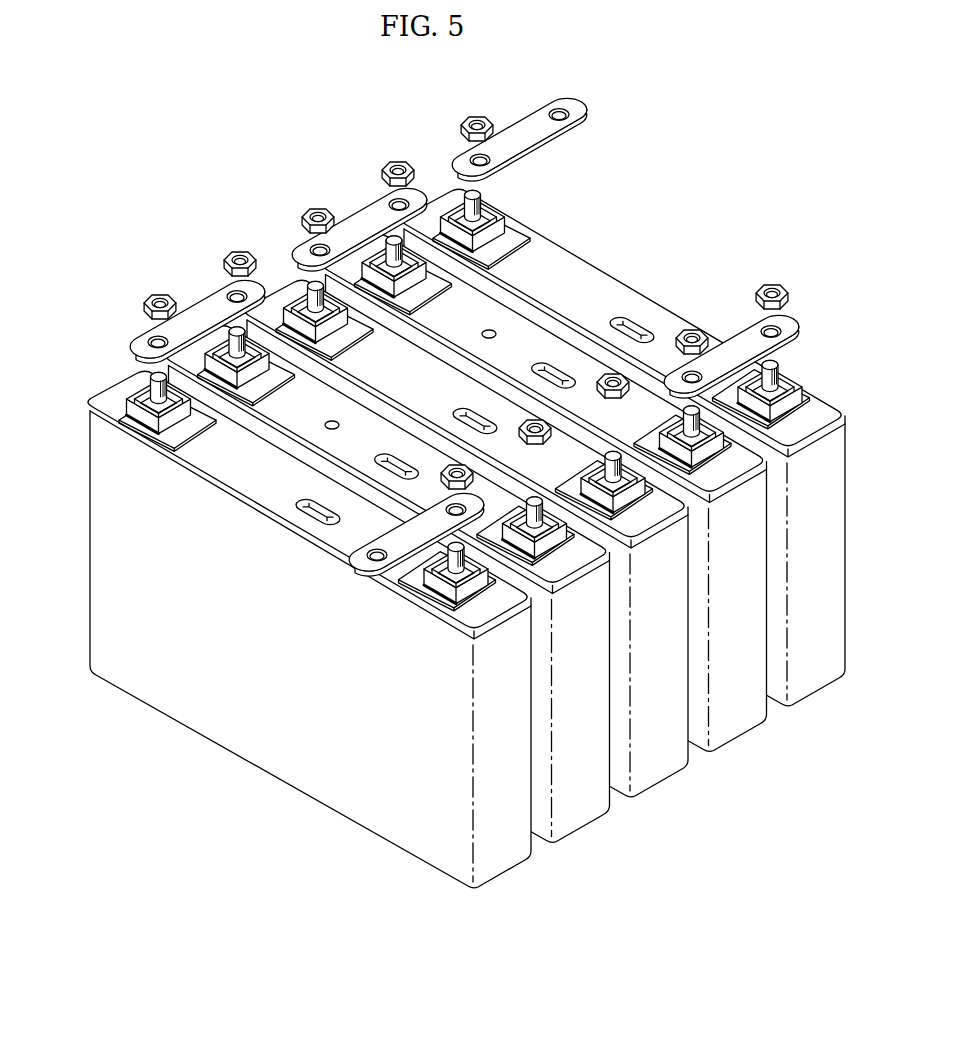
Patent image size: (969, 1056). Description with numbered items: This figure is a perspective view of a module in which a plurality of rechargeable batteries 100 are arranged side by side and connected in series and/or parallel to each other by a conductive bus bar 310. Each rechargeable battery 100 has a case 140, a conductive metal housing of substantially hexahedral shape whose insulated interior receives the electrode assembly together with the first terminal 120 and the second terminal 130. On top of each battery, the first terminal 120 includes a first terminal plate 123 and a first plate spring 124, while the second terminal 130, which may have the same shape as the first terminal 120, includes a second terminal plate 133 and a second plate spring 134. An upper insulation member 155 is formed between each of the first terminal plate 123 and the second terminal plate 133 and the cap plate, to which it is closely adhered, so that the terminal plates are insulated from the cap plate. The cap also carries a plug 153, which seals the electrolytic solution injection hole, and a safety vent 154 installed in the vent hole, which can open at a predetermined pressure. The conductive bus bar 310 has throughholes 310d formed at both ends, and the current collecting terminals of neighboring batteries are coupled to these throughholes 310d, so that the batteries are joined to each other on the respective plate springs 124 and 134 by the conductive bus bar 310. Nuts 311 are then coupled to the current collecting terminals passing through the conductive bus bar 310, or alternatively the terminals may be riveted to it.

The rechargeable battery 100 is at (441, 492).
The first terminal 120 is at (284, 609).
The first terminal plate 123 is at (127, 418).
The first plate spring 124 is at (147, 400).
The second terminal 130 is at (386, 553).
The second terminal plate 133 is at (253, 378).
The second plate spring 134 is at (262, 352).
The case 140 is at (352, 803).
The plug 153 is at (342, 421).
The safety vent 154 is at (310, 514).
The upper insulation member 155 is at (188, 428).
The conductive bus bar 310 is at (210, 303).
The throughholes 310d is at (152, 337).
The nuts 311 is at (152, 293).